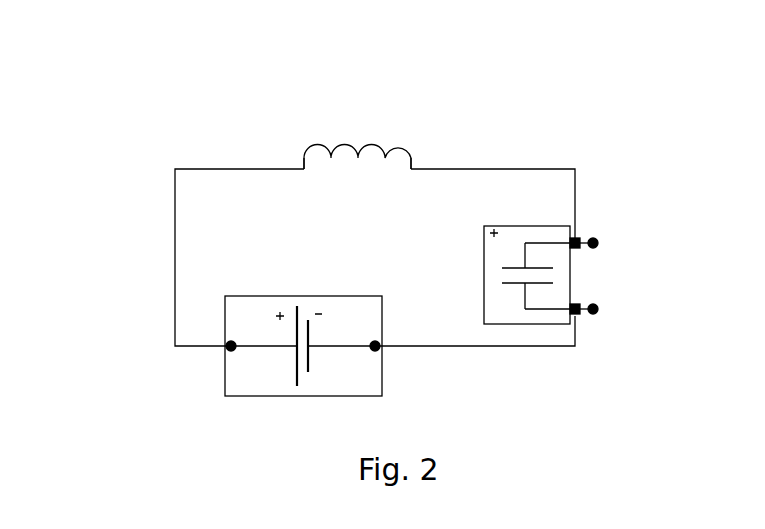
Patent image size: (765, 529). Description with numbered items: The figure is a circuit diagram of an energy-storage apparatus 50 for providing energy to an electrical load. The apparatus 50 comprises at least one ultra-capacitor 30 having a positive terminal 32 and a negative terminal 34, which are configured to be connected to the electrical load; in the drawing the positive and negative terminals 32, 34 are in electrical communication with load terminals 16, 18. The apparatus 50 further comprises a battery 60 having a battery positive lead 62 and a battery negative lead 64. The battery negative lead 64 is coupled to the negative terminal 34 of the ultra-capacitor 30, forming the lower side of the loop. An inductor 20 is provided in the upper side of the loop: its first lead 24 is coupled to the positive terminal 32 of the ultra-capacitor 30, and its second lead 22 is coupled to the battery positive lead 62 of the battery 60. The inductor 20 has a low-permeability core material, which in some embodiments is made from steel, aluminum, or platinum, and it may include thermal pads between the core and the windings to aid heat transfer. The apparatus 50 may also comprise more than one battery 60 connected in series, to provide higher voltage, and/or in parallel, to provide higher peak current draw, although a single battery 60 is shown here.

The energy-storage apparatus 50 is at (112, 102).
The inductor 20 is at (370, 143).
The second lead 22 is at (302, 159).
The first lead 24 is at (413, 161).
The ultra-capacitor 30 is at (498, 327).
The positive terminal 32 is at (580, 238).
The negative terminal 34 is at (577, 315).
The load terminal 16 is at (597, 238).
The load terminal 18 is at (596, 316).
The battery 60 is at (257, 397).
The battery positive lead 62 is at (228, 348).
The battery negative lead 64 is at (379, 349).